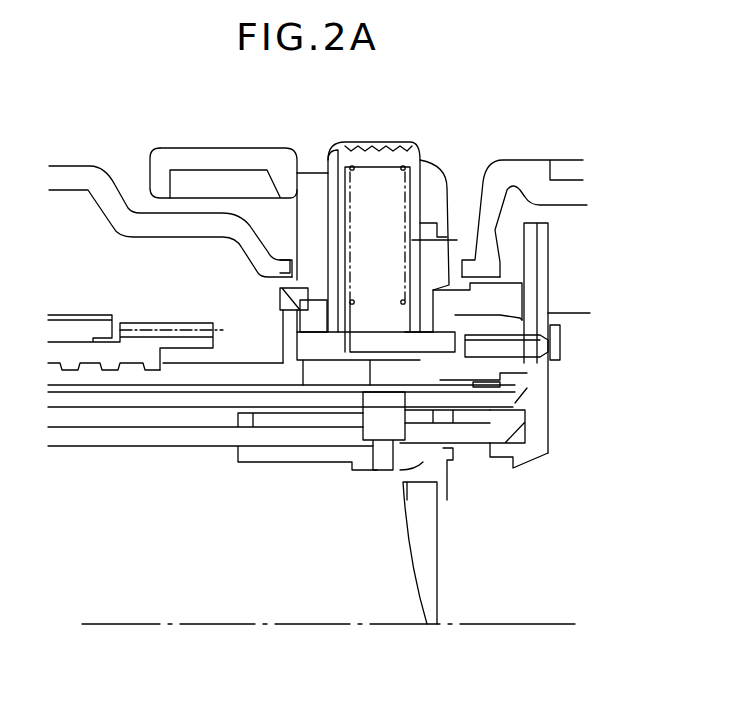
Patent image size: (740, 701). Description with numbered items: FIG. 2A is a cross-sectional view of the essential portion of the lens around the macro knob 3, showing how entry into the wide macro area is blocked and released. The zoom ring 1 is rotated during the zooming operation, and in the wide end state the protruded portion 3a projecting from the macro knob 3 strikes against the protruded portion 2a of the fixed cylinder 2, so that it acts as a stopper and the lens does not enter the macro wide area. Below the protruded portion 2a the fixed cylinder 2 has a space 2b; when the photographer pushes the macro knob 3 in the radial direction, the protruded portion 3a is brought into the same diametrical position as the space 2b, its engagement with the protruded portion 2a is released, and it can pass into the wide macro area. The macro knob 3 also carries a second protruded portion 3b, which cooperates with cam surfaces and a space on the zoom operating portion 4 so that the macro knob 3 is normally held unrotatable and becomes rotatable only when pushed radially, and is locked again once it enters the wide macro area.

The zoom ring 1 is at (505, 282).
The fixed cylinder 2 is at (258, 373).
The protruded portion 2a is at (316, 318).
The space 2b is at (332, 338).
The macro knob 3 is at (397, 143).
The protruded portion 3a is at (324, 322).
The second protruded portion 3b is at (427, 240).
The zoom operating portion 4 is at (443, 240).